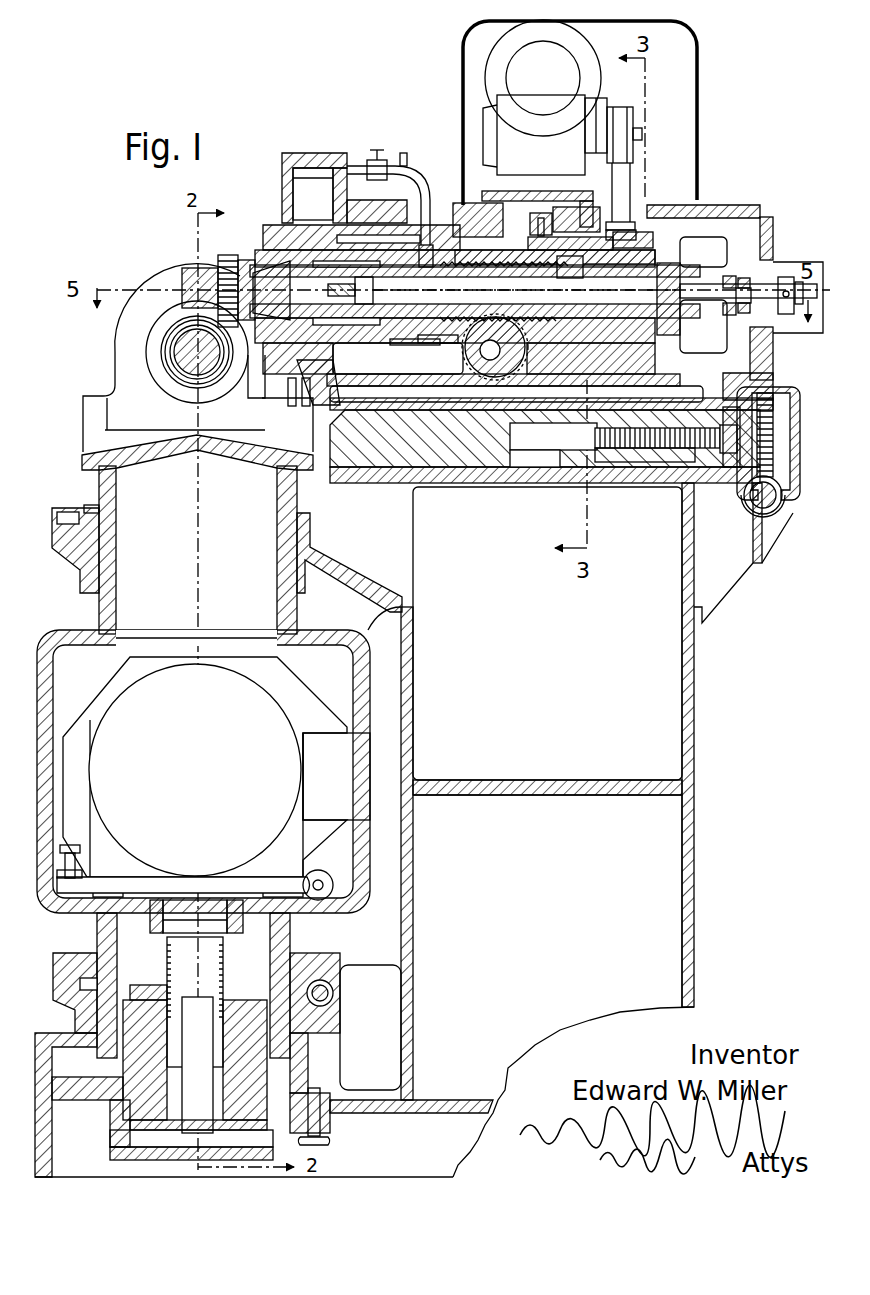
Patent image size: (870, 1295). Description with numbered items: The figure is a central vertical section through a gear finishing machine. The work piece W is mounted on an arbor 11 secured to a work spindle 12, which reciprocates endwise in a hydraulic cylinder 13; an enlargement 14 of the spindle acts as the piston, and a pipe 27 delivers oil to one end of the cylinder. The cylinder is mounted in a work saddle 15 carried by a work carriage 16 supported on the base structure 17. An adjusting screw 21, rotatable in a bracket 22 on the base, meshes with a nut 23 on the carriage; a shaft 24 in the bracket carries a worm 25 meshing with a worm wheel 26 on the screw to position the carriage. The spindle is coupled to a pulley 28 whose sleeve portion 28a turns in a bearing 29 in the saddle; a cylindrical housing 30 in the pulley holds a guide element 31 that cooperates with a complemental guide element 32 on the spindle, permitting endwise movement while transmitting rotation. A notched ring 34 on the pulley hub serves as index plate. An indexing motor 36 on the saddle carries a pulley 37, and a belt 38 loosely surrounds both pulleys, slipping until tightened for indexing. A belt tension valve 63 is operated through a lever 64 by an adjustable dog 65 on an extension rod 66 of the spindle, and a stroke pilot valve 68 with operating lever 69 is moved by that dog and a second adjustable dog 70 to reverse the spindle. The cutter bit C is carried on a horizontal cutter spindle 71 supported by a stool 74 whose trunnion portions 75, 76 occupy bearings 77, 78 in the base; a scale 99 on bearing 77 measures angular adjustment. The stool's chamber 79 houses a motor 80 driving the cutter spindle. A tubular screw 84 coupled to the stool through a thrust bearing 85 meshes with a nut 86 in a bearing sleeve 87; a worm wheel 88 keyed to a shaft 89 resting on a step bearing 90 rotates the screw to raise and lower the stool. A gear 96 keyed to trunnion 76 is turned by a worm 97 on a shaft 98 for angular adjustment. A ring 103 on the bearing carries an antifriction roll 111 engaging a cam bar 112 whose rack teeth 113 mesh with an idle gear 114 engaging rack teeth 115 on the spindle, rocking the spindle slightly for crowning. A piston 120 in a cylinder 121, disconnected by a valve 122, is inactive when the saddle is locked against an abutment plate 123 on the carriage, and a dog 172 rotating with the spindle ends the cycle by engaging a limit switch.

The arbor 11 is at (278, 338).
The work spindle 12 is at (430, 336).
The hydraulic cylinder 13 is at (402, 336).
The enlargement 14 is at (362, 332).
The work saddle 15 is at (280, 226).
The work carriage 16 is at (358, 483).
The base structure 17 is at (684, 667).
The adjusting screw 21 is at (614, 467).
The bracket 22 is at (726, 483).
The nut 23 is at (655, 468).
The shaft 24 is at (770, 510).
The worm 25 is at (779, 503).
The worm wheel 26 is at (775, 405).
The pipe 27 is at (408, 163).
The pulley 28 is at (625, 232).
The sleeve portion 28a is at (552, 256).
The bearing 29 is at (540, 232).
The cylindrical housing 30 is at (636, 246).
The guide element 31 is at (642, 262).
The complemental guide element 32 is at (672, 280).
The notched ring 34 is at (655, 222).
The motor 36 is at (556, 78).
The pulley 37 is at (632, 130).
The belt 38 is at (625, 185).
The belt tension valve 63 is at (708, 348).
The lever 64 is at (746, 308).
The adjustable dog 65 is at (726, 285).
The extension rod 66 is at (770, 288).
The stroke pilot valve 68 is at (712, 246).
The operating lever 69 is at (748, 288).
The second adjustable dog 70 is at (787, 280).
The cutter spindle 71 is at (183, 352).
The stool 74 is at (99, 480).
The trunnion portion 75 is at (99, 602).
The trunnion portion 76 is at (97, 930).
The bearing 77 is at (85, 556).
The bearing 78 is at (85, 966).
The chamber 79 is at (338, 655).
The motor 80 is at (268, 720).
The tubular screw 84 is at (167, 952).
The thrust bearing 85 is at (152, 922).
The nut 86 is at (158, 1000).
The bearing sleeve 87 is at (130, 1070).
The worm wheel 88 is at (125, 1135).
The shaft 89 is at (192, 1080).
The step bearing 90 is at (247, 1134).
The gear 96 is at (295, 985).
The worm 97 is at (332, 1000).
The shaft 98 is at (322, 1003).
The scale 99 is at (99, 505).
The ring 103 is at (582, 205).
The antifriction roll 111 is at (623, 438).
The cam bar 112 is at (330, 404).
The rack teeth 113 is at (416, 380).
The idle gear 114 is at (466, 350).
The rack teeth 115 is at (492, 267).
The piston 120 is at (300, 185).
The cylinder 121 is at (323, 155).
The valve 122 is at (377, 158).
The abutment plate 123 is at (290, 388).
The dog 172 is at (537, 220).
The work piece W is at (225, 260).
The bit C is at (188, 328).